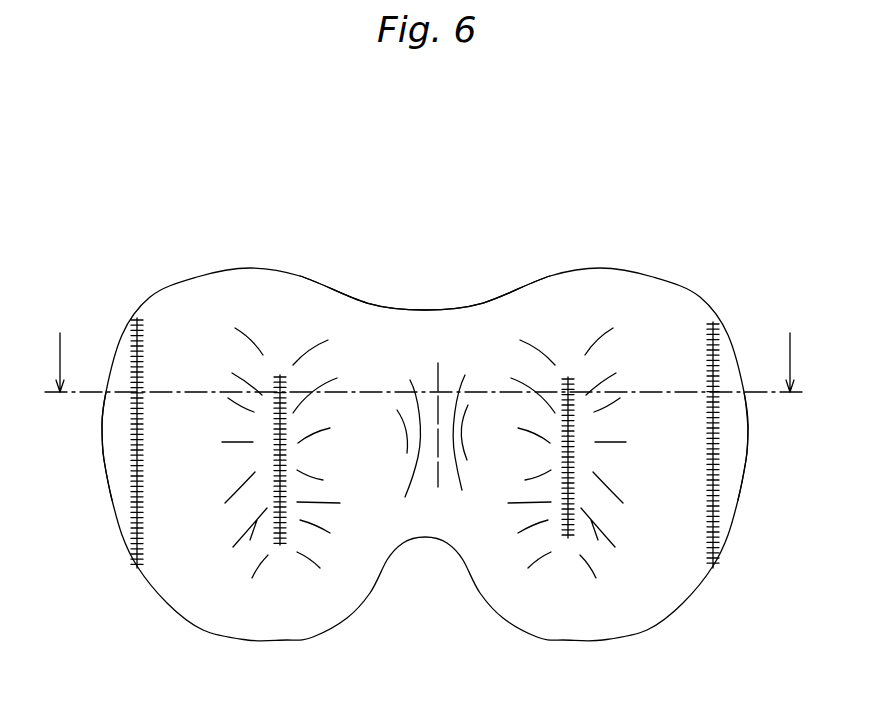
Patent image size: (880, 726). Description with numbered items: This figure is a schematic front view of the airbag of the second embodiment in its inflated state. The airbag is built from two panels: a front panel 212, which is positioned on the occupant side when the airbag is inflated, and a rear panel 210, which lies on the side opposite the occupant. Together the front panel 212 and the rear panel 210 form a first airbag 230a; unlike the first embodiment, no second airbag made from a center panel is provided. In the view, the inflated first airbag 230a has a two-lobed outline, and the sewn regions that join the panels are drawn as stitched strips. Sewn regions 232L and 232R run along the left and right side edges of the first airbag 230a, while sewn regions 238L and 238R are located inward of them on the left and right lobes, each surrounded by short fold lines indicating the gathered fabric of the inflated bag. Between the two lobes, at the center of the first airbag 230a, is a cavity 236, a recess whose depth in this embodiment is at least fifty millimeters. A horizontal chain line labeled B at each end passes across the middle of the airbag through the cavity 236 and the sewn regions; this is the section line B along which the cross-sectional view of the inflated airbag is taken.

The first airbag 230a is at (191, 306).
The front panel 212 is at (493, 298).
The rear panel 210 is at (101, 458).
The sewn region 232L is at (137, 566).
The sewn region 232R is at (717, 565).
The sewn region 238L is at (280, 375).
The sewn region 238R is at (568, 377).
The cavity 236 is at (433, 520).
The line B- B is at (425, 369).